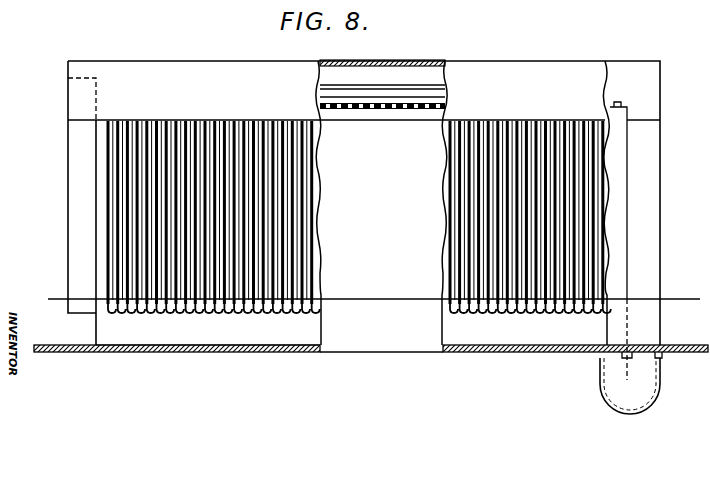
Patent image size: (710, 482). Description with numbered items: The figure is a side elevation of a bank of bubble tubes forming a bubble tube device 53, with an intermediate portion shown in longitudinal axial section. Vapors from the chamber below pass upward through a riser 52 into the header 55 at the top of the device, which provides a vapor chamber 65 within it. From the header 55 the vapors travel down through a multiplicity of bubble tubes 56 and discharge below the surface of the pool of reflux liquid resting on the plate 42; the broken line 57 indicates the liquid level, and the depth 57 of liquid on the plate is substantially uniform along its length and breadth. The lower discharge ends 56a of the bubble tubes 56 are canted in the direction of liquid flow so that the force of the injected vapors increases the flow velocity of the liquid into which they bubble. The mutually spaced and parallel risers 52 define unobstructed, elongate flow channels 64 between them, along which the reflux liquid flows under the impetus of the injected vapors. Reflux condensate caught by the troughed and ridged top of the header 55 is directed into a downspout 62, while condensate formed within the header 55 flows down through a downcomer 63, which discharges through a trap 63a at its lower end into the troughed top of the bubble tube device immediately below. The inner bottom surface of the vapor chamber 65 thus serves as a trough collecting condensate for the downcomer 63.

The bubble tube device 53 is at (76, 50).
The header 55 is at (201, 75).
The vapor chamber 65 is at (411, 78).
The downspout 62 is at (77, 168).
The bubble tube 56 is at (137, 232).
The lower discharge end 56a is at (192, 336).
The downcomer 63 is at (648, 205).
The liquid level 57 is at (684, 298).
The plate 42 is at (232, 353).
The flow channel 64 is at (290, 328).
The riser 52 is at (393, 315).
The trap 63a is at (640, 389).